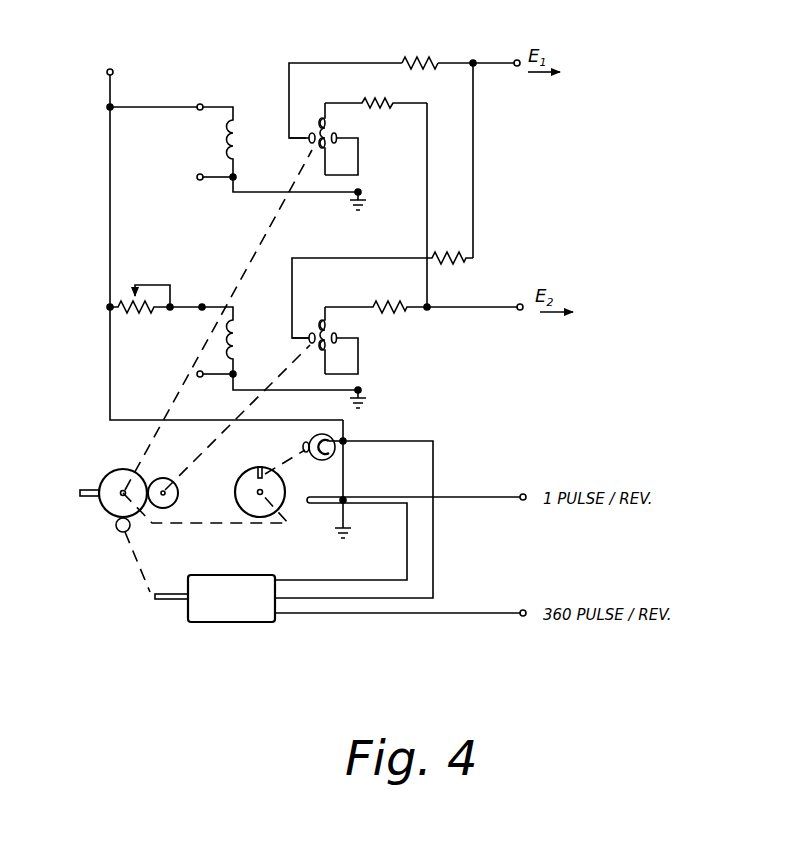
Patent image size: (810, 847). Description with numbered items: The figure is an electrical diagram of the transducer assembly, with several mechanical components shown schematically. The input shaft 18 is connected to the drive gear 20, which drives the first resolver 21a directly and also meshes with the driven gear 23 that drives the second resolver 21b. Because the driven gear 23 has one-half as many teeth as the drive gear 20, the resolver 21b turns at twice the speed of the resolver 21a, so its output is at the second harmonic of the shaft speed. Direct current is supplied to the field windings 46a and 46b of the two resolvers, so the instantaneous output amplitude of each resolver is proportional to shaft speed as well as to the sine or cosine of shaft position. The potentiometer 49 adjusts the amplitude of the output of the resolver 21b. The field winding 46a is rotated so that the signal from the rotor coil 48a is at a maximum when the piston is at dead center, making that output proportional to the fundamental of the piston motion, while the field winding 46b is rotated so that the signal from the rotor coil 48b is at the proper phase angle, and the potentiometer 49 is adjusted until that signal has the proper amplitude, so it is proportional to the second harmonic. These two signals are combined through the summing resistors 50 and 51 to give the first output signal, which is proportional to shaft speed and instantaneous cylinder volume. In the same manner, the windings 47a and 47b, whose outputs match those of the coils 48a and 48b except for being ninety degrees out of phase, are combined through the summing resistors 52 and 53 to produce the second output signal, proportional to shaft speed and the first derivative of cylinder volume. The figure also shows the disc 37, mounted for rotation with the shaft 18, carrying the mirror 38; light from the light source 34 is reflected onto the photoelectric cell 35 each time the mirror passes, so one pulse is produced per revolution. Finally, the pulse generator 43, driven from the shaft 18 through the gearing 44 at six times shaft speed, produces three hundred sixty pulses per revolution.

The shaft 18 is at (80, 498).
The drive gear 20 is at (120, 470).
The resolver 21a is at (362, 165).
The second resolver 21b is at (362, 358).
The driven gear 23 is at (165, 478).
The light source 34 is at (312, 457).
The photoelectric cell 35 is at (316, 505).
The disc 37 is at (236, 495).
The mirror 38 is at (260, 466).
The pulse generator 43 is at (230, 623).
The gearing 44 is at (116, 527).
The field winding 46a is at (222, 142).
The field winding 46b is at (241, 337).
The winding 47a is at (336, 132).
The winding 47b is at (337, 334).
The rotor coil 48a is at (303, 135).
The rotor coil 48b is at (305, 333).
The potentiometer 49 is at (160, 285).
The summing resistor 50 is at (420, 58).
The summing resistor 51 is at (446, 255).
The summing resistor 52 is at (383, 100).
The summing resistor 53 is at (373, 302).